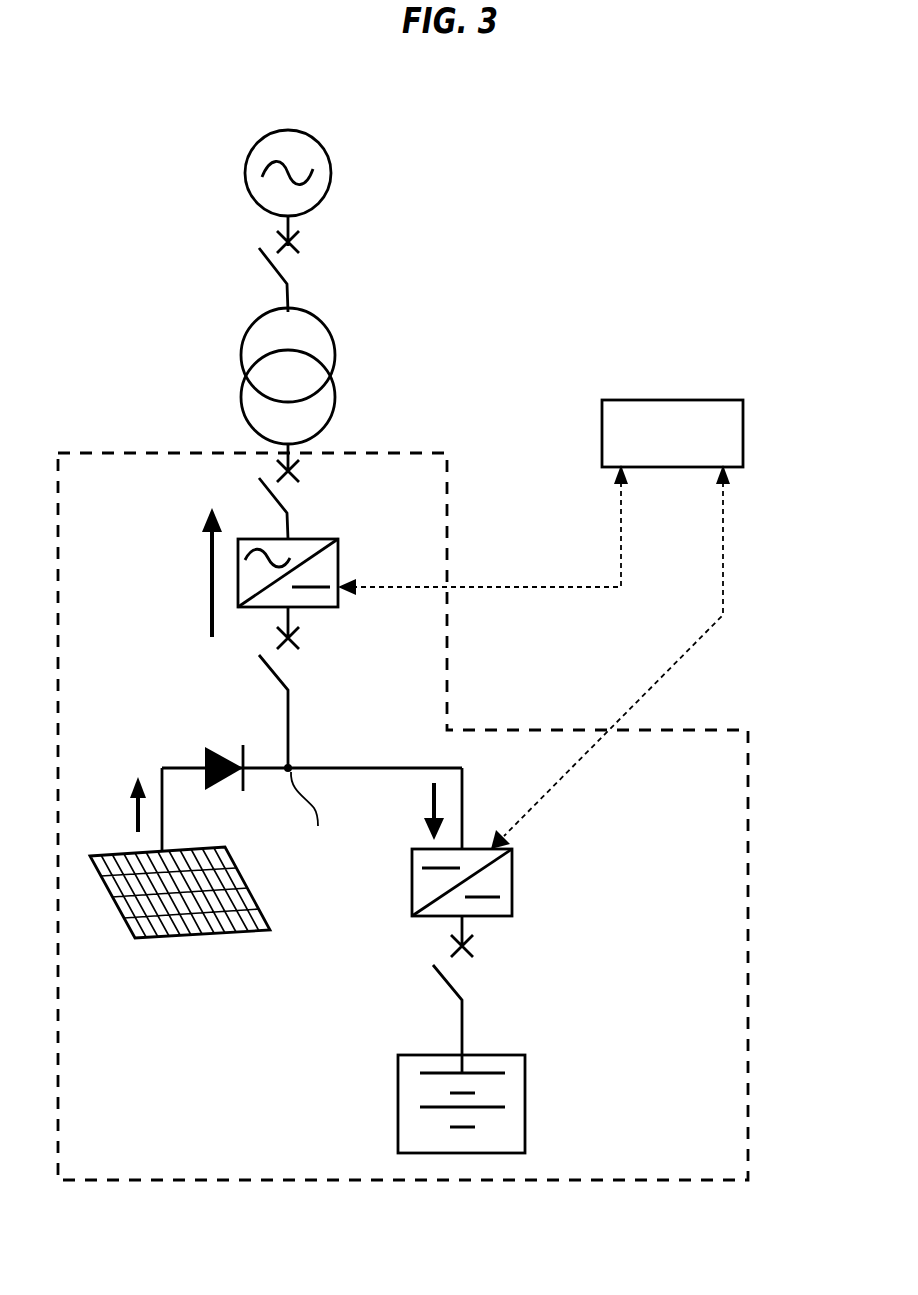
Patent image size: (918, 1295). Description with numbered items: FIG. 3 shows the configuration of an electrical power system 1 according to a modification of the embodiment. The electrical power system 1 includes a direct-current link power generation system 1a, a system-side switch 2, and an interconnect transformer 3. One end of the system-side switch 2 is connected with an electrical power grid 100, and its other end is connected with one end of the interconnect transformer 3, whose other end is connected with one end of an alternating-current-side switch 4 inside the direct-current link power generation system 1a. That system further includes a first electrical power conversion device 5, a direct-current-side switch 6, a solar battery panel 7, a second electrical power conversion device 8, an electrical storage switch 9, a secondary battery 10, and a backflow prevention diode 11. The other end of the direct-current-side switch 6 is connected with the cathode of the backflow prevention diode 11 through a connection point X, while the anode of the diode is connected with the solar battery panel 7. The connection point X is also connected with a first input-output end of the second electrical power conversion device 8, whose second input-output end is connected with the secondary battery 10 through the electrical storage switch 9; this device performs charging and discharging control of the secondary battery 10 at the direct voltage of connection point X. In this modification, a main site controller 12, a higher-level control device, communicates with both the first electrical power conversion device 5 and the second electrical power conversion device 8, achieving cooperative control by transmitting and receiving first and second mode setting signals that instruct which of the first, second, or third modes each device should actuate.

The electrical power system 1 is at (566, 186).
The direct-current link power generation system 1a is at (447, 453).
The electrical power grid 100 is at (331, 170).
The system-side switch 2 is at (264, 266).
The interconnect transformer 3 is at (336, 352).
The alternating-current-side switch 4 is at (264, 487).
The first electrical power conversion device 5 is at (338, 556).
The direct-current-side switch 6 is at (266, 677).
The solar battery panel 7 is at (205, 932).
The second electrical power conversion device 8 is at (512, 882).
The electrical storage switch 9 is at (441, 986).
The secondary battery 10 is at (525, 1101).
The backflow prevention diode 11 is at (205, 752).
The main site controller (MSC) 12 is at (670, 400).